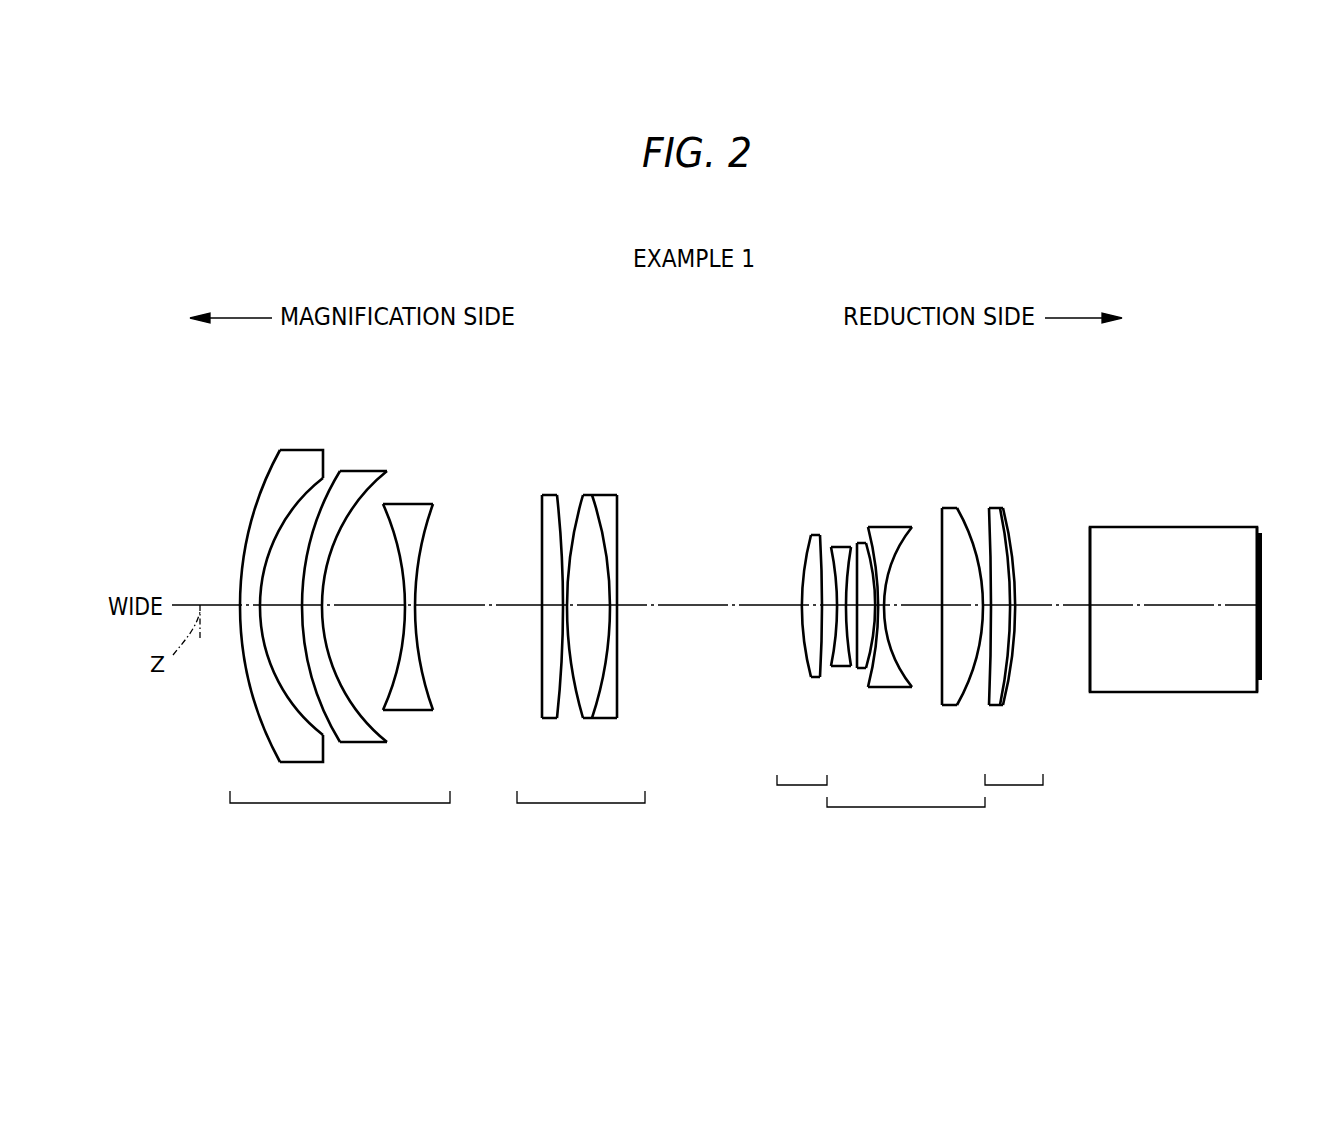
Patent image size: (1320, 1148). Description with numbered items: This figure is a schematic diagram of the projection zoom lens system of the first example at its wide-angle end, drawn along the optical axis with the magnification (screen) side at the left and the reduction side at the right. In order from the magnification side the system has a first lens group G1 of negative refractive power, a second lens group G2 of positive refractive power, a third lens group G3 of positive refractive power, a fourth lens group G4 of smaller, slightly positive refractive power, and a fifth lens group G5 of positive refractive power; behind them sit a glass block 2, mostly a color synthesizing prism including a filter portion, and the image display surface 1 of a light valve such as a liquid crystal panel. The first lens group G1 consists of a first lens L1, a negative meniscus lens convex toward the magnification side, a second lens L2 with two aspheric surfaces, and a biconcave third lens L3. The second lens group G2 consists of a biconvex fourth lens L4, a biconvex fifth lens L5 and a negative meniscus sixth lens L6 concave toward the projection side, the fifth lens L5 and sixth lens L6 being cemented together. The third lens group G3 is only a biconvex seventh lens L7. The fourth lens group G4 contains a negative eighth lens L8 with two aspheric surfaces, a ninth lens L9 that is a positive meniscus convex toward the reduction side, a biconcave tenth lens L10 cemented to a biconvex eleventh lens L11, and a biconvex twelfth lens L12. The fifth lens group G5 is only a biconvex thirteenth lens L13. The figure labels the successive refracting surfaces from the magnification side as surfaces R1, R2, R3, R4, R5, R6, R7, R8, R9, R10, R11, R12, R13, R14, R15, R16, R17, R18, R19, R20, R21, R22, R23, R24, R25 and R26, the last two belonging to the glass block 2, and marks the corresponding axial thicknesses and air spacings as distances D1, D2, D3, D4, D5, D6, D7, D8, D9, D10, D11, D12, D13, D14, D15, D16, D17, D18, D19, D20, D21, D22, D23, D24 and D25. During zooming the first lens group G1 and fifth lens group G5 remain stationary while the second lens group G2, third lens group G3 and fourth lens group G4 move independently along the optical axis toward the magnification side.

The image display surface 1 is at (1262, 668).
The glass block 2 is at (1178, 580).
The first lens group G1 is at (340, 821).
The second lens group G2 is at (581, 821).
The third lens group G3 is at (802, 803).
The fourth lens group G4 is at (906, 822).
The fifth lens group G5 is at (1014, 803).
The first lens L1 is at (254, 576).
The second lens L2 is at (344, 574).
The third lens L3 is at (412, 581).
The fourth lens L4 is at (525, 573).
The fifth lens L5 is at (615, 573).
The sixth lens L6 is at (630, 574).
The seventh lens L7 is at (772, 588).
The eighth lens L8 is at (798, 563).
The ninth lens L9 is at (847, 532).
The tenth lens L10 is at (908, 521).
The eleventh lens L11 is at (965, 537).
The twelfth lens L12 is at (1021, 545).
The thirteenth lens L13 is at (1034, 572).
The lens surface R1 is at (239, 598).
The lens surface R2 is at (266, 560).
The lens surface R3 is at (303, 560).
The lens surface R4 is at (323, 596).
The lens surface R5 is at (400, 597).
The lens surface R6 is at (422, 597).
The lens surface R7 is at (541, 597).
The lens surface R8 is at (561, 530).
The lens surface R9 is at (571, 522).
The lens surface R10 is at (607, 537).
The lens surface R11 is at (619, 585).
The lens surface R12 is at (801, 603).
The lens surface R13 is at (821, 586).
The lens surface R14 is at (834, 585).
The lens surface R15 is at (848, 588).
The lens surface R16 is at (858, 588).
The lens surface R17 is at (871, 586).
The lens surface R18 is at (880, 592).
The lens surface R19 is at (903, 575).
The lens surface R20 is at (941, 565).
The lens surface R21 is at (962, 520).
The lens surface R22 is at (990, 552).
The lens surface R23 is at (1003, 550).
The lens surface R24 is at (1012, 598).
The cover glass surface R25 is at (1090, 548).
The cover glass surface R26 is at (1260, 532).
The surface spacing D1 is at (246, 620).
The surface spacing D2 is at (281, 621).
The surface spacing D3 is at (318, 614).
The surface spacing D4 is at (364, 623).
The surface spacing D5 is at (412, 615).
The surface spacing D6 is at (469, 621).
The surface spacing D7 is at (550, 618).
The surface spacing D8 is at (562, 612).
The surface spacing D9 is at (588, 612).
The surface spacing D10 is at (615, 612).
The surface spacing D11 is at (701, 619).
The surface spacing D12 is at (808, 612).
The surface spacing D13 is at (826, 612).
The surface spacing D14 is at (840, 612).
The surface spacing D15 is at (853, 612).
The surface spacing D16 is at (862, 612).
The surface spacing D17 is at (872, 612).
The surface spacing D18 is at (881, 612).
The surface spacing D19 is at (927, 612).
The surface spacing D20 is at (950, 612).
The surface spacing D21 is at (985, 612).
The surface spacing D22 is at (1000, 612).
The surface spacing D23 is at (1010, 612).
The surface spacing D24 is at (1054, 628).
The surface spacing D25 is at (1166, 628).